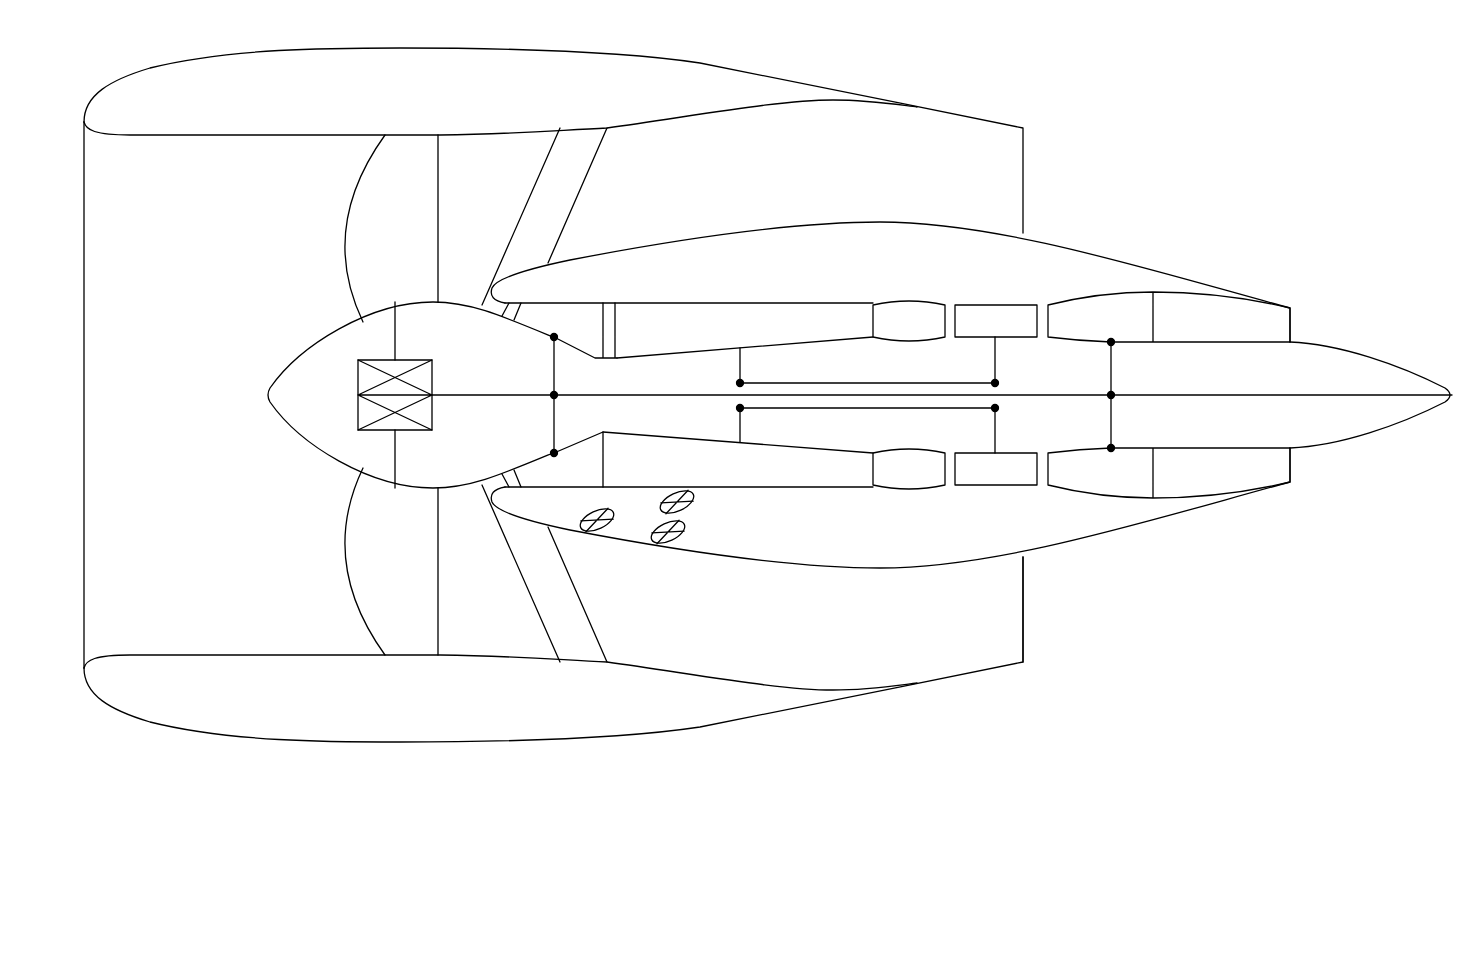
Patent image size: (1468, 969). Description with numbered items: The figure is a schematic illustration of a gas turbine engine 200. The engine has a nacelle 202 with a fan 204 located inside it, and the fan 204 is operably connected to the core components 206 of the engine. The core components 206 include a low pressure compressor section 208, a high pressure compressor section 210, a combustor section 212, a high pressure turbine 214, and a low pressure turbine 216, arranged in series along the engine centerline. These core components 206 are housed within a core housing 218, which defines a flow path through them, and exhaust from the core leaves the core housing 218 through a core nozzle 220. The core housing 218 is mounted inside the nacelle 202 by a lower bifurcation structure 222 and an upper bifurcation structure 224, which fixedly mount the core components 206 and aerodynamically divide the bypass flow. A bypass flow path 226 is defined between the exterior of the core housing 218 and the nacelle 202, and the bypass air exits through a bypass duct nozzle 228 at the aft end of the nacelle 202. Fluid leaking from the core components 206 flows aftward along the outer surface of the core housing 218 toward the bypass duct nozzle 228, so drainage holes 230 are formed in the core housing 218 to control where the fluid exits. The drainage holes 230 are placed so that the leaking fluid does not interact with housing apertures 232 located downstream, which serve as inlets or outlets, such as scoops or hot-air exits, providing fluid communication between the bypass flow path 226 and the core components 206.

The gas turbine engine 200 is at (1272, 70).
The nacelle 202 is at (343, 723).
The fan 204 is at (362, 232).
The core components 206 is at (298, 383).
The low pressure compressor section 208 is at (588, 307).
The high pressure compressor section 210 is at (720, 317).
The combustor section 212 is at (907, 313).
The high pressure turbine 214 is at (993, 478).
The low pressure turbine 216 is at (1078, 473).
The core housing 218 is at (1073, 253).
The core nozzle 220 is at (1235, 476).
The lower bifurcation structure 222 is at (547, 617).
The upper bifurcation structure 224 is at (543, 193).
The bypass flow path 226 is at (777, 192).
The bypass duct nozzle 228 is at (1004, 648).
The drainage holes 230 is at (603, 537).
The housing apertures 232 is at (700, 502).